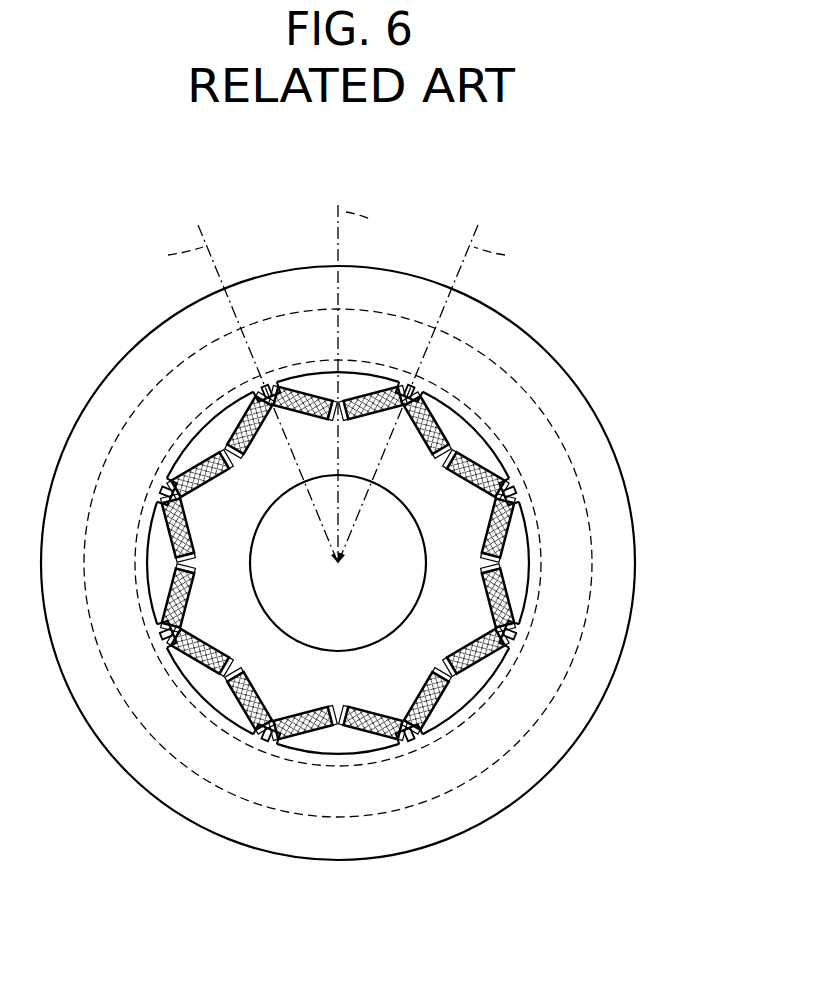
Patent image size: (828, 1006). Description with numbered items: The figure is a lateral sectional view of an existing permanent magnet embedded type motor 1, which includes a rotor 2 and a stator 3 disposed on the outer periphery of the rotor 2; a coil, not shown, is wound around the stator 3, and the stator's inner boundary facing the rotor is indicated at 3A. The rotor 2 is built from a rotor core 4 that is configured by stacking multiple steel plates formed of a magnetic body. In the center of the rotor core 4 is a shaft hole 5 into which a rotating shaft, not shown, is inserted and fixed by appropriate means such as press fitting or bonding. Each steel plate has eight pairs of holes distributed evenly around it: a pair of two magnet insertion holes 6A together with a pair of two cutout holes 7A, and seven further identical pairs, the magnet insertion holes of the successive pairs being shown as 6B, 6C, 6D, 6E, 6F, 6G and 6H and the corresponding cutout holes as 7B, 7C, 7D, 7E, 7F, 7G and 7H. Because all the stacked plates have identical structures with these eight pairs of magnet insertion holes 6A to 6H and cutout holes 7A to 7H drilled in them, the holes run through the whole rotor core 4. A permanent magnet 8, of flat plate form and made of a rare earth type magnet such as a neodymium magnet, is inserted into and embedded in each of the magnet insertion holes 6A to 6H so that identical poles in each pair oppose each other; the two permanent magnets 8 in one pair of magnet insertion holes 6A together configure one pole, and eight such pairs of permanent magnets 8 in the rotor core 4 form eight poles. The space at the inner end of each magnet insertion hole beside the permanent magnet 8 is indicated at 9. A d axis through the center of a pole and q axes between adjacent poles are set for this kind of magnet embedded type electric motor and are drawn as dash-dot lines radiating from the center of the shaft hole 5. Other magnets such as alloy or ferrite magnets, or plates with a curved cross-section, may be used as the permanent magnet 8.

The permanent magnet embedded type motor 1 is at (372, 532).
The rotor 2 is at (532, 563).
The stator 3 is at (622, 470).
The stator inner circumference 3A is at (592, 522).
The rotor core 4 is at (383, 662).
The shaft hole 5 is at (424, 566).
The magnet insertion hole 6A is at (298, 416).
The magnet insertion hole 6B is at (424, 438).
The magnet insertion hole 6C is at (483, 598).
The magnet insertion hole 6D is at (452, 660).
The magnet insertion hole 6E is at (368, 710).
The magnet insertion hole 6F is at (262, 692).
The magnet insertion hole 6G is at (197, 602).
The magnet insertion hole 6H is at (250, 438).
The cutout hole 7A is at (271, 383).
The cutout hole 7B is at (414, 387).
The cutout hole 7C is at (514, 497).
The cutout hole 7D is at (513, 642).
The cutout hole 7E is at (272, 742).
The cutout hole 7F is at (260, 744).
The cutout hole 7G is at (163, 632).
The cutout hole 7H is at (157, 483).
The permanent magnet 8 is at (288, 384).
The inner flux barrier 9 is at (329, 393).